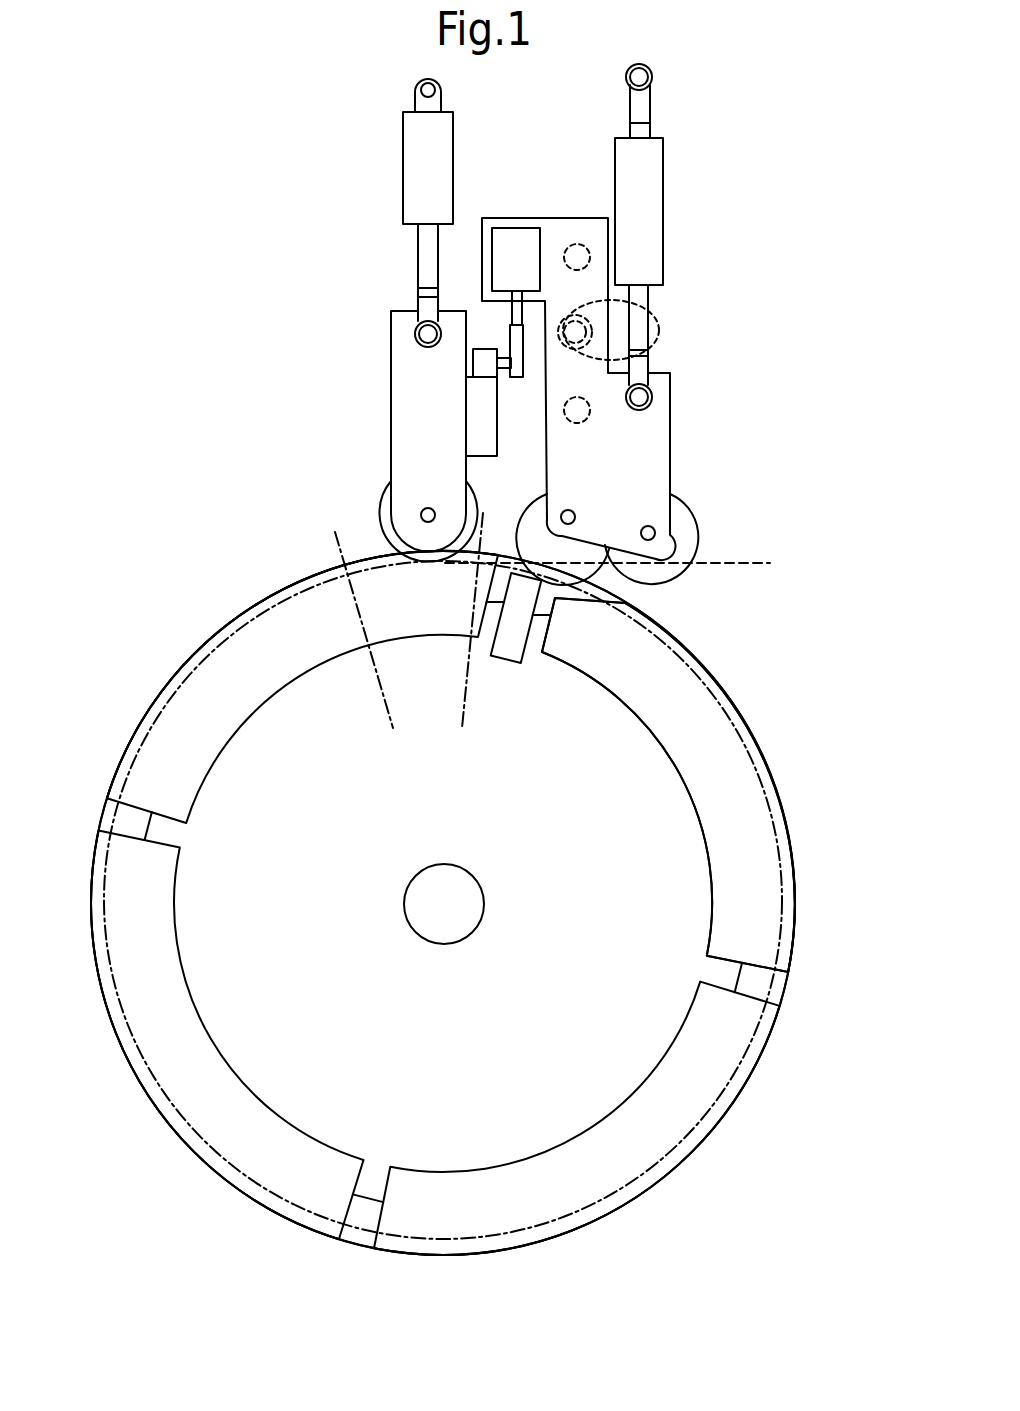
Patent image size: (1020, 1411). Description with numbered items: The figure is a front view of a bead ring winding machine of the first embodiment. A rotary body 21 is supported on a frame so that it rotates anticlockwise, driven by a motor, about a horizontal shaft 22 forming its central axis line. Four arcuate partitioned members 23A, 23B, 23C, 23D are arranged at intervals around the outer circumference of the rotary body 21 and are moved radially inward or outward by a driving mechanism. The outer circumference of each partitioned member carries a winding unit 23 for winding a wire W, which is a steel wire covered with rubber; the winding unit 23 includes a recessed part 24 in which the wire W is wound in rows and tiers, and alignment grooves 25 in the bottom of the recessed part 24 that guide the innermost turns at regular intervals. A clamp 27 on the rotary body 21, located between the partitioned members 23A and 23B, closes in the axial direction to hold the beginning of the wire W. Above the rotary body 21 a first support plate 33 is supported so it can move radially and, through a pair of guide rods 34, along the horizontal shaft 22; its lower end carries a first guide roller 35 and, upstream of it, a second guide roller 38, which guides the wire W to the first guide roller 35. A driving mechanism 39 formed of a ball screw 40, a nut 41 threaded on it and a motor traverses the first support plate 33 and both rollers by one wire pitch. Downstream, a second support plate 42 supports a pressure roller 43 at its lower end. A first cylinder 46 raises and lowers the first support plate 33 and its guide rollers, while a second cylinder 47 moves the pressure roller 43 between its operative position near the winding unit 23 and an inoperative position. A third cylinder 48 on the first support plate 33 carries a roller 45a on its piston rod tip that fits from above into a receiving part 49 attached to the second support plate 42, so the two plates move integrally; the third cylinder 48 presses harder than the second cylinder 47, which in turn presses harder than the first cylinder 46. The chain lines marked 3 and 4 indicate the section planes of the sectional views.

The rotary body 21 is at (217, 959).
The horizontal shaft 22 is at (479, 902).
The winding unit 23 is at (752, 776).
The partitioned member 23A is at (313, 662).
The partitioned member 23B is at (720, 851).
The partitioned member 23C is at (580, 1142).
The partitioned member 23D is at (305, 1140).
The recessed part 24 is at (243, 648).
The alignment grooves 25 is at (152, 722).
The clamp 27 is at (510, 665).
The first support plate 33 is at (597, 221).
The guide rods 34 is at (571, 246).
The first guide roller 35 is at (533, 484).
The second guide roller 38 is at (688, 527).
The driving mechanism 39 is at (640, 298).
The ball screw 40 is at (637, 330).
The nut 41 is at (640, 354).
The second support plate 42 is at (402, 371).
The pressure roller 43 is at (381, 498).
The roller 45a is at (486, 352).
The first cylinder 46 is at (657, 151).
The second cylinder 47 is at (404, 199).
The third cylinder 48 is at (515, 232).
The receiving part 49 is at (490, 397).
The wire W is at (772, 902).
The section line 3- 3 is at (333, 536).
The section line 4- 4 is at (502, 512).